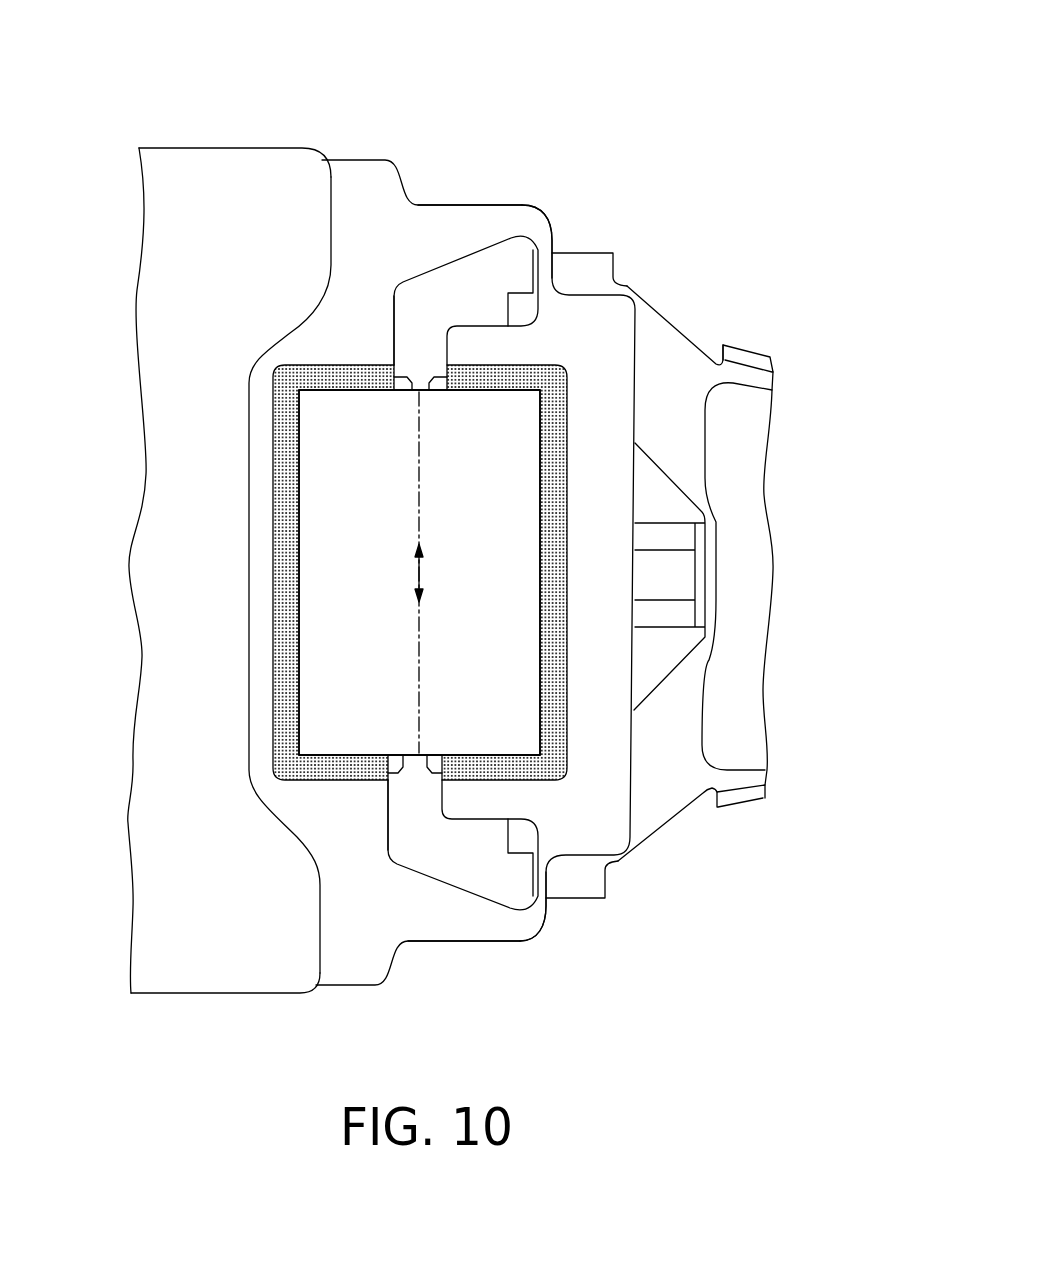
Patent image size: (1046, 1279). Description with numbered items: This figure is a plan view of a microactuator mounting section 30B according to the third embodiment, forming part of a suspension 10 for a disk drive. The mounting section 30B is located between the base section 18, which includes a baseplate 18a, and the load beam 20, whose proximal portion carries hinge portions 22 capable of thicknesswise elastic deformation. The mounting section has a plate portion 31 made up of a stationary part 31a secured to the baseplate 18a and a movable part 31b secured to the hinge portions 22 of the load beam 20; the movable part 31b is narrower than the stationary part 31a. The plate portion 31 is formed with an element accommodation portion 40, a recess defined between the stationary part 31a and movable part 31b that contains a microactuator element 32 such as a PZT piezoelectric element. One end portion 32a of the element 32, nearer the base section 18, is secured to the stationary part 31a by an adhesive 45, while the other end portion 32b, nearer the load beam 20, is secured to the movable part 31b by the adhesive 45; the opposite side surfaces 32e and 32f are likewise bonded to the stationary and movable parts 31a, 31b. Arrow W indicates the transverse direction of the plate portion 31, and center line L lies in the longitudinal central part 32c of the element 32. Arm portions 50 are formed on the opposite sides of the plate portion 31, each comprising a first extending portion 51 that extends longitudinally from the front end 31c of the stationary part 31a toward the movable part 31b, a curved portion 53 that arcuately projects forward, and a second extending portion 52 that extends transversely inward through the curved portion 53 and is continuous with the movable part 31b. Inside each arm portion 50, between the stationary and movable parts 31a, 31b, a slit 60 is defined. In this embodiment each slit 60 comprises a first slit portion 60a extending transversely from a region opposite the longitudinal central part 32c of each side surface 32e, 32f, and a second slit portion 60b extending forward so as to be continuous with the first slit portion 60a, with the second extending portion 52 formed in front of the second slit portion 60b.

The suspension 10 is at (664, 1014).
The base section 18 is at (190, 146).
The baseplate 18a is at (156, 269).
The load beam 20 is at (750, 352).
The hinge portions 22 is at (663, 340).
The microactuator mounting section 30B is at (756, 95).
The plate portion 31 is at (352, 192).
The stationary part 31a is at (290, 800).
The movable part 31b is at (613, 762).
The front end 31c is at (410, 178).
The microactuator element 32 is at (348, 683).
The end portion 32a is at (312, 568).
The end portion 32b is at (508, 604).
The longitudinal central part 32c is at (418, 380).
The side surface 32e is at (490, 391).
The side surface 32f is at (487, 756).
The element accommodation portion 40 is at (268, 378).
The adhesive 45 is at (285, 474).
The arm portions 50 is at (532, 218).
The first extending portion 51 is at (463, 203).
The second extending portion 52 is at (548, 240).
The curved portion 53 is at (550, 222).
The slits 60 is at (440, 265).
The first slit portion 60a is at (394, 292).
The second slit portion 60b is at (482, 325).
The center line L is at (423, 497).
The transverse direction W is at (423, 575).